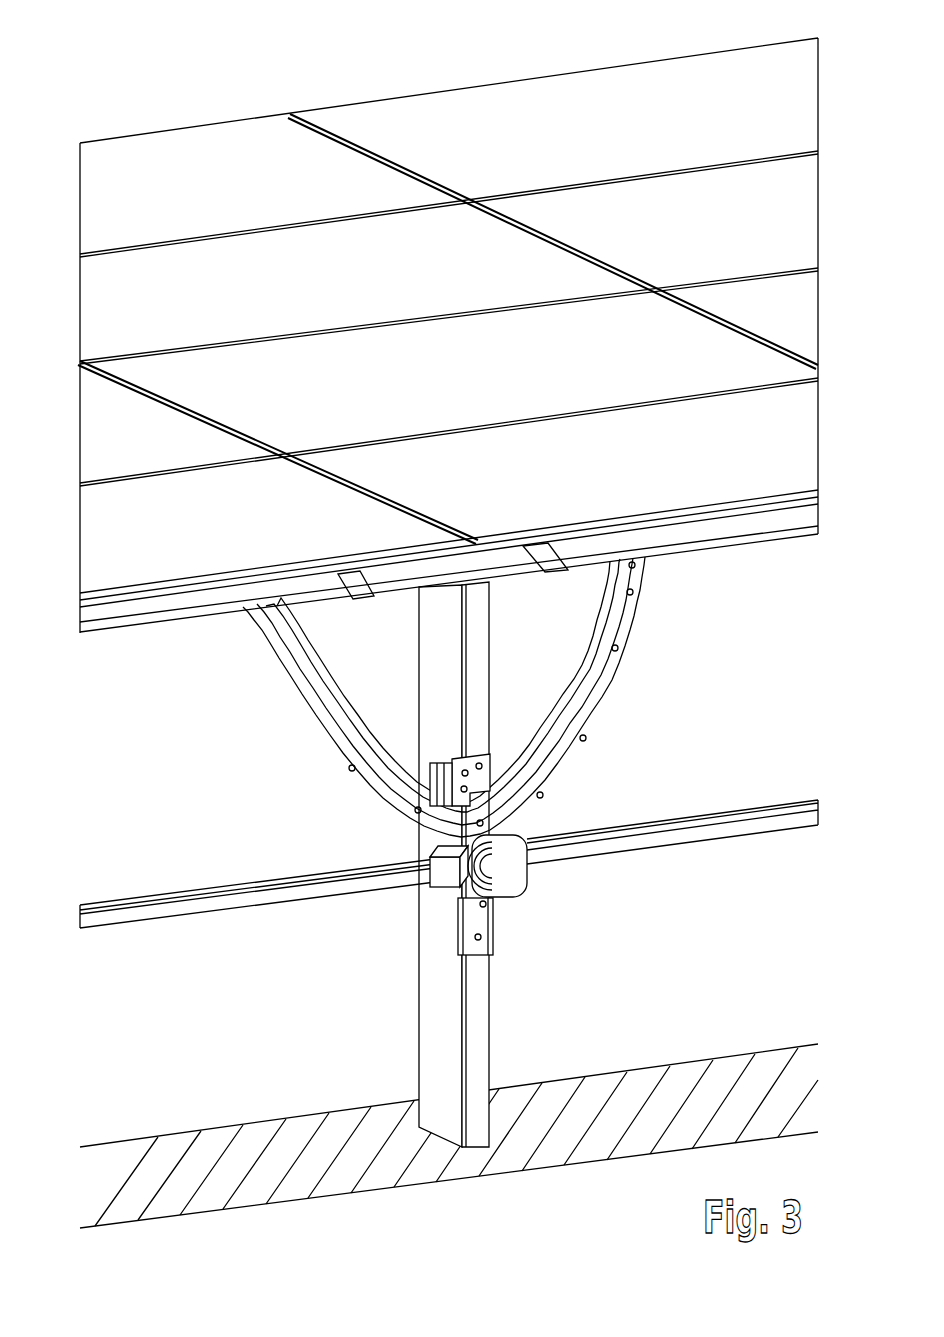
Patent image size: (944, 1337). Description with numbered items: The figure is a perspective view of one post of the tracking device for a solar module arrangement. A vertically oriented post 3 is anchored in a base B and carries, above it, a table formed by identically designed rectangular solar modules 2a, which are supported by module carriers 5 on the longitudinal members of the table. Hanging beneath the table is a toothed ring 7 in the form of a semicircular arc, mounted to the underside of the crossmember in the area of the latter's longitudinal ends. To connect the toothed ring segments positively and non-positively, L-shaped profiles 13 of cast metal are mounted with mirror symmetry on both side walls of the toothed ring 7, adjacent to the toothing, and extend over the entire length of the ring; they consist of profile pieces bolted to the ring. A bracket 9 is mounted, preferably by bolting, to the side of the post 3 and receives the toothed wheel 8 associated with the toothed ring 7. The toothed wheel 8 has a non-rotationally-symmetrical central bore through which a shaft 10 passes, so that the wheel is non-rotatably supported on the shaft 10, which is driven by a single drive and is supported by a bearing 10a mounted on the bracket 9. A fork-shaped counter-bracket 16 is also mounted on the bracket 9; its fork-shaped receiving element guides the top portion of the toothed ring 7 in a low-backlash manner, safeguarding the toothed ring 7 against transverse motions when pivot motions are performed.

The solar module 2a is at (194, 145).
The post 3 is at (438, 1030).
The module carrier 5 is at (353, 600).
The toothed ring 7 is at (647, 600).
The toothed wheel 8 is at (447, 893).
The bracket 9 is at (488, 775).
The shaft 10 is at (158, 905).
The bearing 10a is at (520, 878).
The L-shaped profile 13 is at (577, 760).
The fork-shaped counter-bracket 16 is at (450, 768).
The base B is at (724, 1065).